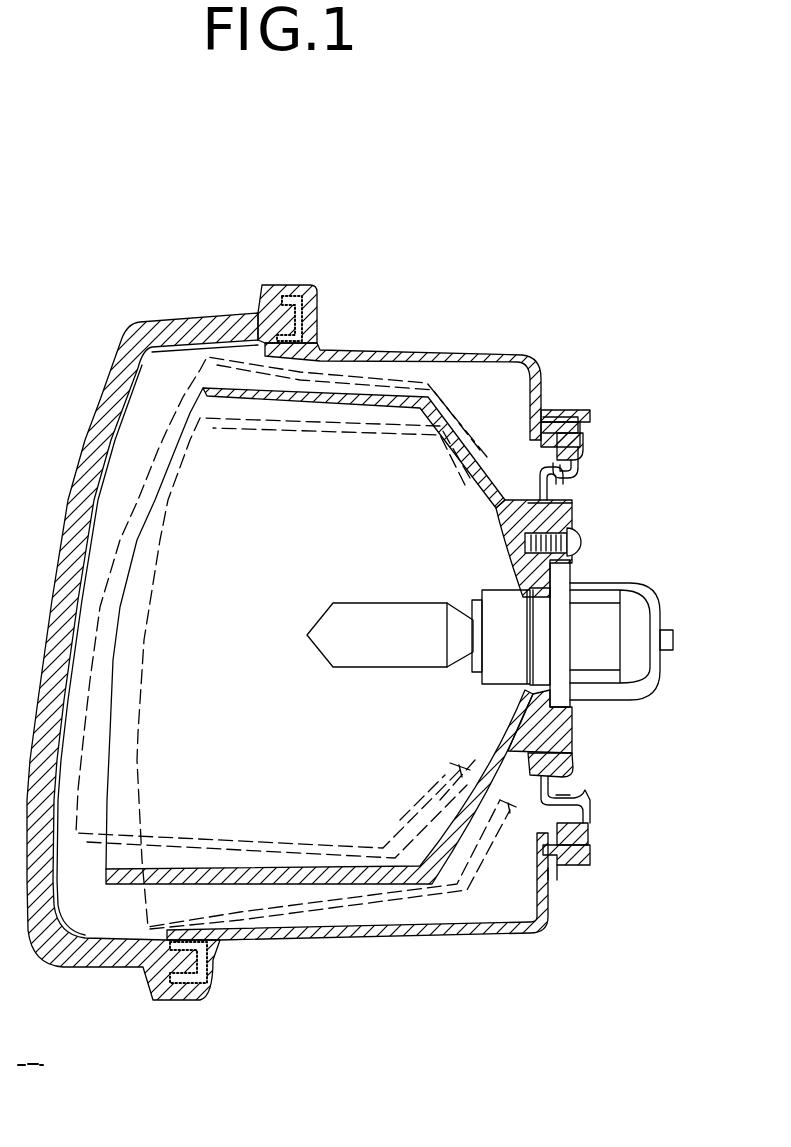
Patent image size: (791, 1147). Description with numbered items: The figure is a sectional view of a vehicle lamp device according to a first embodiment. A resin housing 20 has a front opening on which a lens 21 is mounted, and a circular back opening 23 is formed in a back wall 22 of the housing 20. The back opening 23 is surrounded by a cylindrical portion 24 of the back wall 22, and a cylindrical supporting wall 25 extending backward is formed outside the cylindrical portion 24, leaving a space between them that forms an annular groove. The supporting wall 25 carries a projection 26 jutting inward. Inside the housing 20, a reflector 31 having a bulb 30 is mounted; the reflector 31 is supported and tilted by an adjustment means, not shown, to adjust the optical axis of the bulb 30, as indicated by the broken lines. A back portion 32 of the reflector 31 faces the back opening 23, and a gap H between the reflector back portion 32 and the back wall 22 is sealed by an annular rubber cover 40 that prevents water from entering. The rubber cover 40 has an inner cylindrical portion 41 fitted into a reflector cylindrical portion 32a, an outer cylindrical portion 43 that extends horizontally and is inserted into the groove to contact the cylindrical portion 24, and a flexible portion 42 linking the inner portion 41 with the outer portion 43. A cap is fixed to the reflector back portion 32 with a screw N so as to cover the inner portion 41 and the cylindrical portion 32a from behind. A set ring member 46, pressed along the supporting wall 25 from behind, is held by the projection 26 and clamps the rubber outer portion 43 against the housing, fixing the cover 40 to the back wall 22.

The housing 20 is at (420, 353).
The lens 21 is at (137, 326).
The back wall 22 is at (547, 372).
The circular back opening 23 is at (546, 808).
The cylindrical portion 24 is at (551, 806).
The supporting wall 25 is at (580, 865).
The projection 26 is at (588, 855).
The bulb 30 is at (368, 601).
The reflector 31 is at (206, 835).
The back portion of the reflector 32 is at (555, 548).
The reflector cylindrical portion 32a is at (520, 745).
The annular rubber cover 40 is at (586, 800).
The inner cylindrical portion 41 is at (573, 743).
The flexible portion 42 is at (575, 795).
The outer cylindrical portion 43 is at (547, 868).
The set ring member 46 is at (588, 838).
The gap H is at (565, 478).
The screw N is at (583, 538).